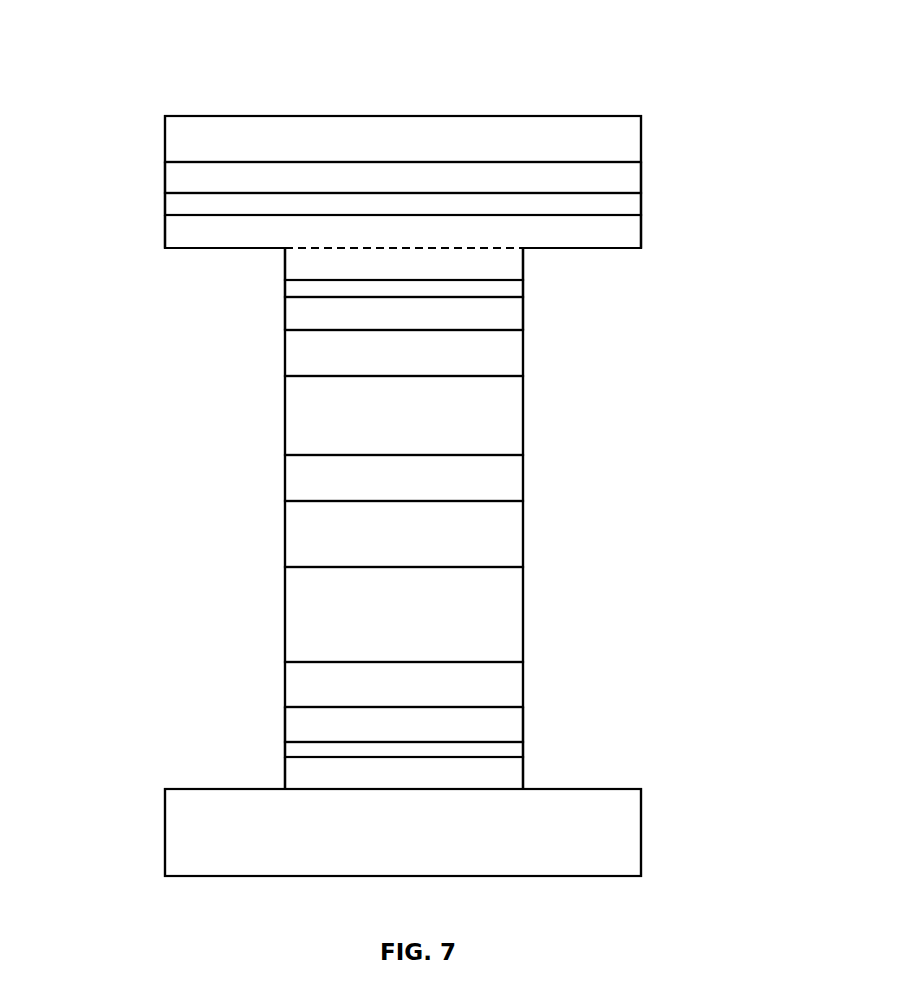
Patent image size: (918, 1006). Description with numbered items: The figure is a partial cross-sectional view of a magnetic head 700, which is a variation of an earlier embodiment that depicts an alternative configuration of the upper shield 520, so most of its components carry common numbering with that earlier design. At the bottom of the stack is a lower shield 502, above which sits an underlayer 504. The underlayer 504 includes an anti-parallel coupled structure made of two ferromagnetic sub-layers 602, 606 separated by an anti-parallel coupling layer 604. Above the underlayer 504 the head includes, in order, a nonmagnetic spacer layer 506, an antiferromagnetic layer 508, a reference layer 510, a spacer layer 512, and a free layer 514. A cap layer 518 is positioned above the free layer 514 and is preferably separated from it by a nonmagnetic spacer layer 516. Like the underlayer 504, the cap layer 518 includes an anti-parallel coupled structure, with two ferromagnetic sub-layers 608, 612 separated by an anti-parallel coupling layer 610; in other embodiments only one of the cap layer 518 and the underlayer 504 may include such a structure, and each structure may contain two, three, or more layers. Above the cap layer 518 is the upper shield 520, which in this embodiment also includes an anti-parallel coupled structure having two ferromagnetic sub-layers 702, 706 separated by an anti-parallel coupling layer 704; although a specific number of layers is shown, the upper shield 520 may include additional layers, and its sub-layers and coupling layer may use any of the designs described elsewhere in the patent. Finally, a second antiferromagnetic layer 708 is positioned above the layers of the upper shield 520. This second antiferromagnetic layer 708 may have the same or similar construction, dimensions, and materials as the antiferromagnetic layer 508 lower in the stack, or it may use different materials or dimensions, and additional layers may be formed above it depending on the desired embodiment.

The magnetic head 700 is at (662, 66).
The second AFM layer 708 is at (385, 152).
The ferromagnetic sub-layer 706 is at (165, 180).
The anti-parallel coupling layer 704 is at (165, 205).
The ferromagnetic sub-layer 702 is at (165, 236).
The upper shield 520 is at (645, 162).
The ferromagnetic sub-layer 612 is at (285, 266).
The anti-parallel coupling layer 610 is at (313, 299).
The ferromagnetic sub-layer 608 is at (493, 332).
The cap layer 518 is at (527, 250).
The nonmagnetic spacer layer 516 is at (385, 365).
The free layer 514 is at (385, 427).
The spacer layer 512 is at (385, 489).
The reference layer 510 is at (385, 547).
The antiferromagnetic (AFM) layer 508 is at (385, 630).
The nonmagnetic spacer layer 506 is at (385, 698).
The ferromagnetic sub-layer 606 is at (497, 706).
The anti-parallel coupling layer 604 is at (310, 739).
The ferromagnetic sub-layer 602 is at (285, 768).
The underlayer 504 is at (527, 707).
The lower shield 502 is at (390, 849).